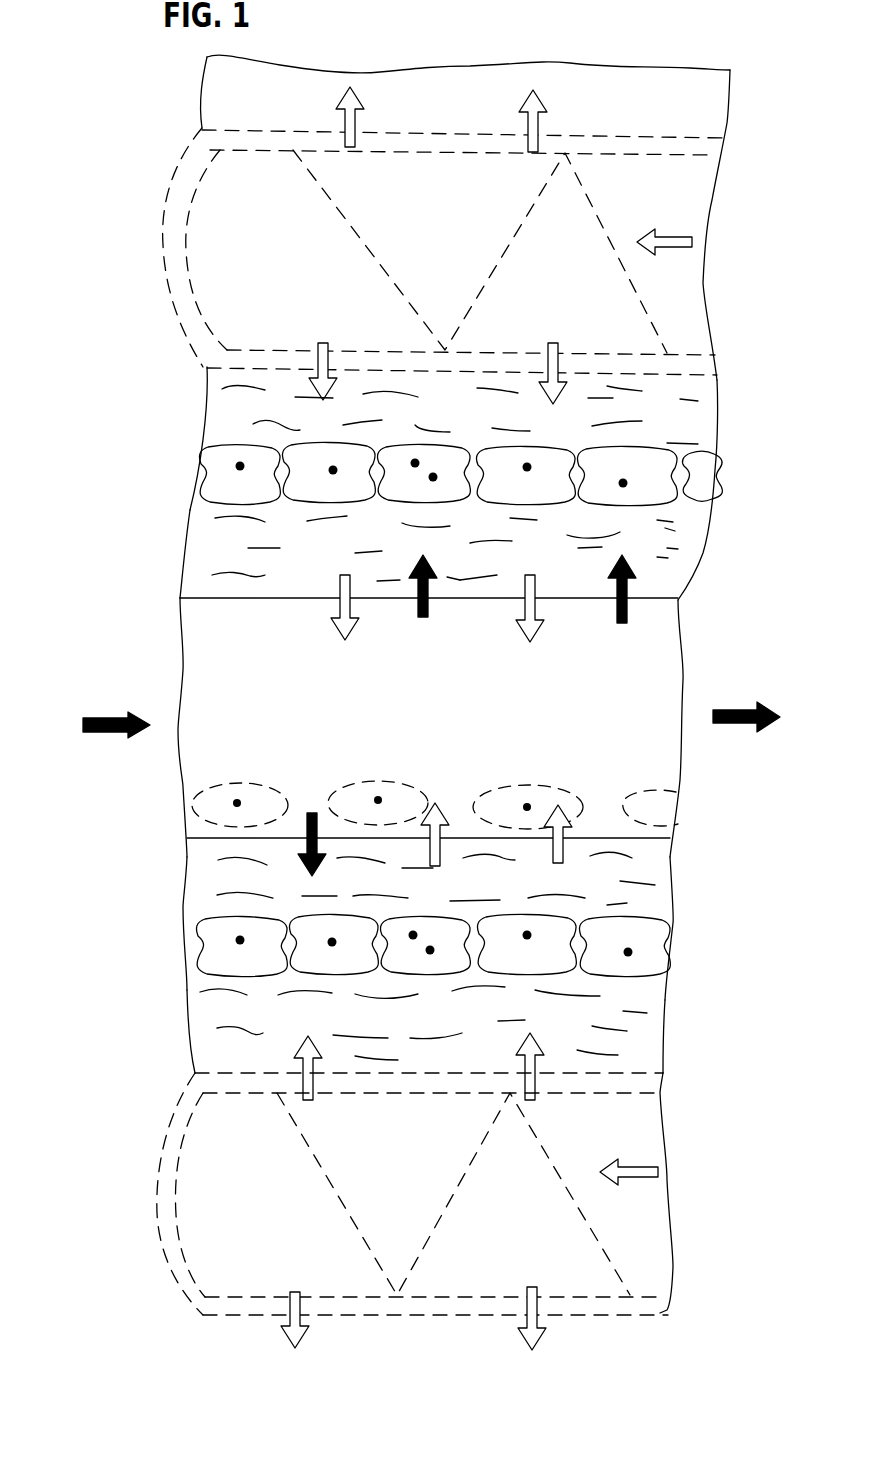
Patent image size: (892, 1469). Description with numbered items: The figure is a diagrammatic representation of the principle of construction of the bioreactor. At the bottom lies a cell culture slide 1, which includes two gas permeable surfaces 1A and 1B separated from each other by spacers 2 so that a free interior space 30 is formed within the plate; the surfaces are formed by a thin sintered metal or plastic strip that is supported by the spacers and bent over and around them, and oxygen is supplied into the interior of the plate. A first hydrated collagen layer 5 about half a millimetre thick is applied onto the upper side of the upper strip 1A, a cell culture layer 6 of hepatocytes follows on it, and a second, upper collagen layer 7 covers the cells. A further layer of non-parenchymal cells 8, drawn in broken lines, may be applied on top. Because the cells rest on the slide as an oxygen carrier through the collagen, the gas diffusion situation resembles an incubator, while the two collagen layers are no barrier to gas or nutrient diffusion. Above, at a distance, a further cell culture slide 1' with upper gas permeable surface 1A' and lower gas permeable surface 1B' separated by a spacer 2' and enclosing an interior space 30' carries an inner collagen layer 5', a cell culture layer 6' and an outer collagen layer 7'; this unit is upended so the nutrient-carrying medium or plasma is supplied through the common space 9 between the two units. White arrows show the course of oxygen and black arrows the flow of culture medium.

The cell culture slide 1 is at (410, 1213).
The upper gas permeable surface 1A is at (385, 1114).
The lower gas permeable surface 1B is at (395, 1298).
The spacers 2 is at (453, 1194).
The free interior space 30 is at (156, 1194).
The first hydrated collagen layer 5 is at (395, 1032).
The cell culture layer 6 is at (397, 960).
The upper collagen layer 7 is at (399, 926).
The layer of non-parenchymal cells 8 is at (203, 800).
The common space 9 is at (183, 668).
The further cell culture slide 1' is at (417, 217).
The upper gas permeable surface of further slide 1A' is at (416, 157).
The lower gas permeable surface of further slide 1B' is at (418, 346).
The spacer of further slide 2' is at (480, 251).
The rounded edge of second support plate 30' is at (166, 247).
The inner collagen layer 5' is at (416, 438).
The second cell culture layer 6' is at (428, 474).
The outer collagen layer 7' is at (421, 490).